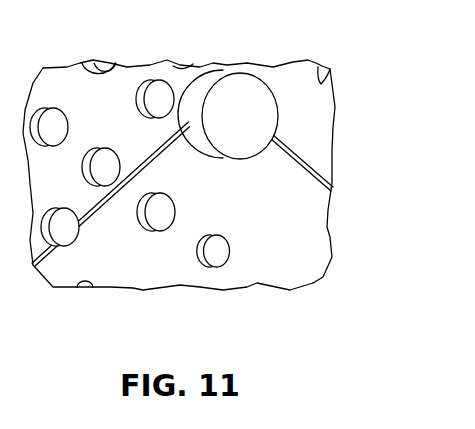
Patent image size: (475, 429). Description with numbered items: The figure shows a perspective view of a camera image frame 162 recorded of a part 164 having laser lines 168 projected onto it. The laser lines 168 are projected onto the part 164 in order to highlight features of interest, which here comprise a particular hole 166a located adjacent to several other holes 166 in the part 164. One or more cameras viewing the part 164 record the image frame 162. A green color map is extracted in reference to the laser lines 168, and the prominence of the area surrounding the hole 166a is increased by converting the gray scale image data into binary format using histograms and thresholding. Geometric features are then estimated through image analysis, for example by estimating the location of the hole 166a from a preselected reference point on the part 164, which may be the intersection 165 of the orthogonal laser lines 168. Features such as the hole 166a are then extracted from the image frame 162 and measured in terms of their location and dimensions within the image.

The image frame 162 is at (342, 238).
The part 164 is at (268, 253).
The intersection 165 is at (299, 86).
The holes 166 is at (41, 195).
The hole 166a is at (292, 105).
The laser lines 168 is at (306, 164).